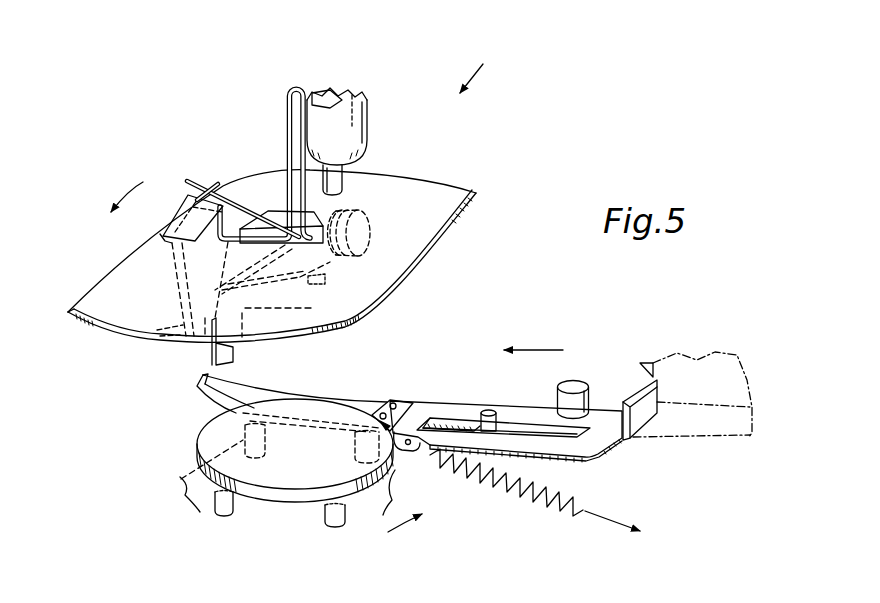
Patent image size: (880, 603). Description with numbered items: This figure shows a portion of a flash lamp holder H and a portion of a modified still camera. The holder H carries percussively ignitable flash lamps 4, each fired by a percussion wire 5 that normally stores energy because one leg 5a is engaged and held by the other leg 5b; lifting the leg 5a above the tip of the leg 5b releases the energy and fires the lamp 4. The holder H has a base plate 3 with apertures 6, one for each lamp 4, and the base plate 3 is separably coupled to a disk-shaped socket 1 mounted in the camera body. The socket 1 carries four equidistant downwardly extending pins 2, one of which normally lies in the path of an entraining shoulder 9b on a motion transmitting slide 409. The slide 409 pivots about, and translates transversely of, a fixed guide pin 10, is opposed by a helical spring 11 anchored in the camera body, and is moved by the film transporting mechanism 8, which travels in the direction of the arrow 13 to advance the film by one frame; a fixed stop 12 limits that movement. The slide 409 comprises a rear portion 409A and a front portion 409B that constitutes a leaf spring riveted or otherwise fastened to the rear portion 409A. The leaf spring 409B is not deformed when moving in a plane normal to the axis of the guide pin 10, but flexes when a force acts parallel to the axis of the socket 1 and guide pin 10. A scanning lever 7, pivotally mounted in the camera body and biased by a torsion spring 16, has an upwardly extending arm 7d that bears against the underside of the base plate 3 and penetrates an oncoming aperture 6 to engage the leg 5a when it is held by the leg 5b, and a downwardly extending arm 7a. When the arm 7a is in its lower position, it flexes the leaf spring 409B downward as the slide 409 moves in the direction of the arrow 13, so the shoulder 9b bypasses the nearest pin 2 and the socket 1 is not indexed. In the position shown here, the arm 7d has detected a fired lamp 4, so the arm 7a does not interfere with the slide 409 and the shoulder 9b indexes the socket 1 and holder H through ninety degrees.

The disk-shaped socket 1 is at (281, 506).
The pins 2 is at (193, 497).
The base plate 3 is at (106, 327).
The flash lamp 4 is at (362, 132).
The percussion wire 5 is at (300, 77).
The leg 5a is at (202, 183).
The leg 5b is at (215, 228).
The apertures 6 is at (170, 232).
The scanning lever 7 is at (244, 299).
The downwardly extending arm 7a is at (210, 361).
The upwardly extending arm 7d is at (185, 194).
The film transporting mechanism 8 is at (652, 355).
The shoulder 9b is at (393, 450).
The guide pin 10 is at (489, 410).
The helical spring 11 is at (515, 497).
The fixed stop 12 is at (577, 382).
The arrow 13 is at (539, 350).
The torsion spring 16 is at (334, 267).
The motion transmitting slide 409 is at (597, 465).
The rear portion 409A is at (435, 410).
The leaf spring front portion 409B is at (255, 377).
The flash lamp holder H is at (481, 72).